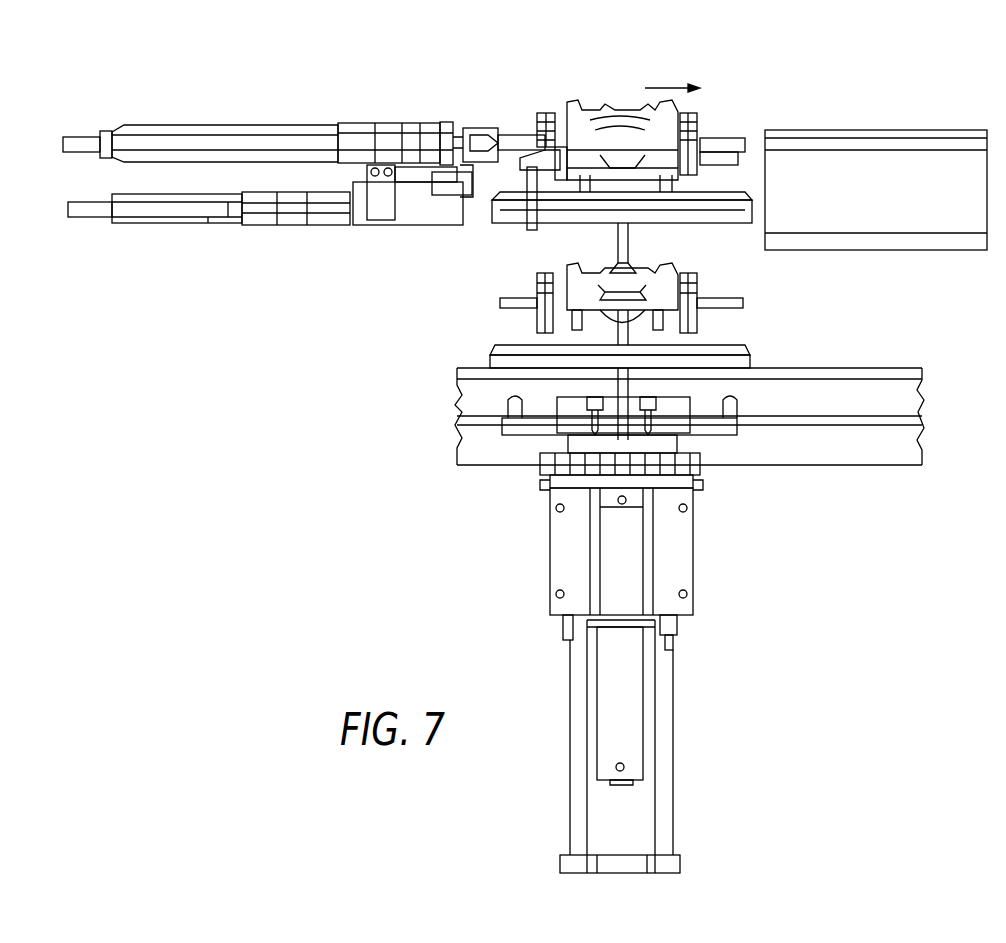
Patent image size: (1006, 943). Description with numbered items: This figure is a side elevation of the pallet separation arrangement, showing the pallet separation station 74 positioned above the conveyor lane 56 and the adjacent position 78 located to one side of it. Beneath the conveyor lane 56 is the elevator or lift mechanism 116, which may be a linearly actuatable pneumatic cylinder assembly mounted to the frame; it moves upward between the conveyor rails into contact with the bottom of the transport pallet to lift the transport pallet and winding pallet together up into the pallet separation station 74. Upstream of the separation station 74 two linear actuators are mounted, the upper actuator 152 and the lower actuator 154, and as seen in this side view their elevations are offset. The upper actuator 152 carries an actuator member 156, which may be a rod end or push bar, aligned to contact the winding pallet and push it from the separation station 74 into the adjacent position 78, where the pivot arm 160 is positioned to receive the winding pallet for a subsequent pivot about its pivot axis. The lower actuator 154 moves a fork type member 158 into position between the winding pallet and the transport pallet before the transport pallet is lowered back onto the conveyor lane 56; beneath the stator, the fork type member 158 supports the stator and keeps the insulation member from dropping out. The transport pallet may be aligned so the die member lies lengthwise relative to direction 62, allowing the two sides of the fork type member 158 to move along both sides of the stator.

The upper actuator 152 is at (266, 126).
The lower actuator 154 is at (262, 225).
The actuator member 156 is at (472, 126).
The fork type member 158 is at (478, 200).
The pallet separation station 74 is at (558, 97).
The adjacent position 78 is at (661, 117).
The pivot arm 160 is at (885, 130).
The direction 62 is at (383, 409).
The conveyor lane 56 is at (902, 366).
The elevator or lift mechanism 116 is at (486, 545).